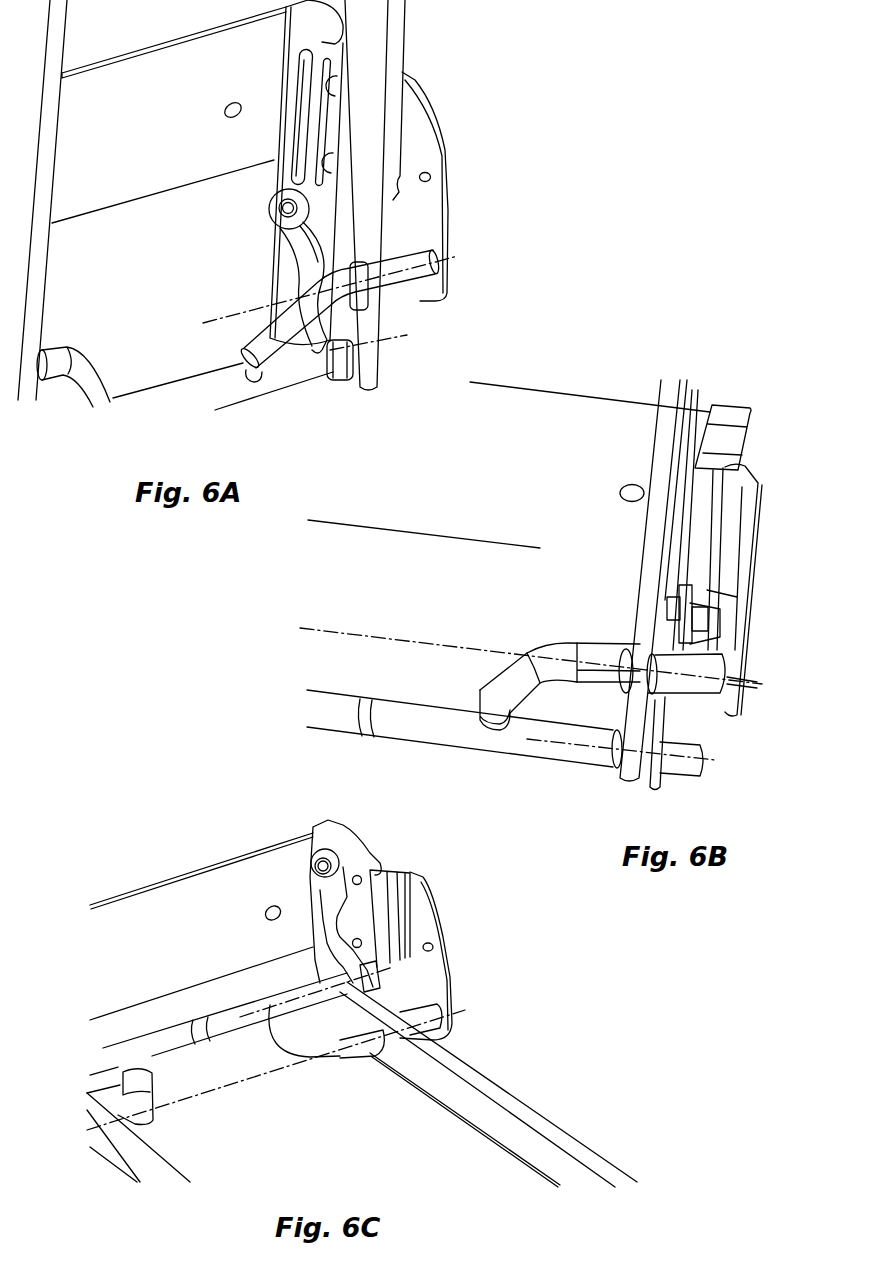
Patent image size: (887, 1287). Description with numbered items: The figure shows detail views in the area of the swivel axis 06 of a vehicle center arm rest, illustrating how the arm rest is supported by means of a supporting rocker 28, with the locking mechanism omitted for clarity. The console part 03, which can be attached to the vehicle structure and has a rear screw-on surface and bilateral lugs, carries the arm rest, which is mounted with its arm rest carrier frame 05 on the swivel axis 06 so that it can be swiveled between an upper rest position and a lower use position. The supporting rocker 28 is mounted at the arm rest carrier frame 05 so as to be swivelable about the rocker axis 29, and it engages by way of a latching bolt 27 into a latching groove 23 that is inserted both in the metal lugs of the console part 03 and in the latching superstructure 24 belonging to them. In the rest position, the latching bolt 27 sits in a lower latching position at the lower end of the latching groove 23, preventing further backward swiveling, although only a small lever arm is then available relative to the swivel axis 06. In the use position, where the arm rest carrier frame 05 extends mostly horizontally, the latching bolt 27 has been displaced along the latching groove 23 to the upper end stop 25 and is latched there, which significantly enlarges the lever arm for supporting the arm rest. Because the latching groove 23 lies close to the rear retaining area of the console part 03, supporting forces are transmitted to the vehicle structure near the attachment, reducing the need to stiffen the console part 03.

In FIG. 6A, the console part 03 is at (175, 205).
In FIG. 6B, the console part 03 is at (509, 465).
In FIG. 6C, the console part 03 is at (323, 1010).
In FIG. 6A, the arm rest carrier frame 05 is at (368, 20).
In FIG. 6C, the arm rest carrier frame 05 is at (517, 1130).
In FIG. 6C, the swivel axis 06 is at (198, 1095).
In FIG. 6A, the latching groove 23 is at (308, 145).
In FIG. 6B, the latching superstructure 24 is at (712, 485).
In FIG. 6A, the upper end stop 25 is at (308, 58).
In FIG. 6A, the latching bolt 27 is at (282, 214).
In FIG. 6A, the supporting rocker 28 is at (300, 258).
In FIG. 6B, the supporting rocker 28 is at (677, 715).
In FIG. 6C, the supporting rocker 28 is at (330, 898).
In FIG. 6A, the rocker axis 29 is at (400, 338).
In FIG. 6C, the rocker axis 29 is at (272, 1008).